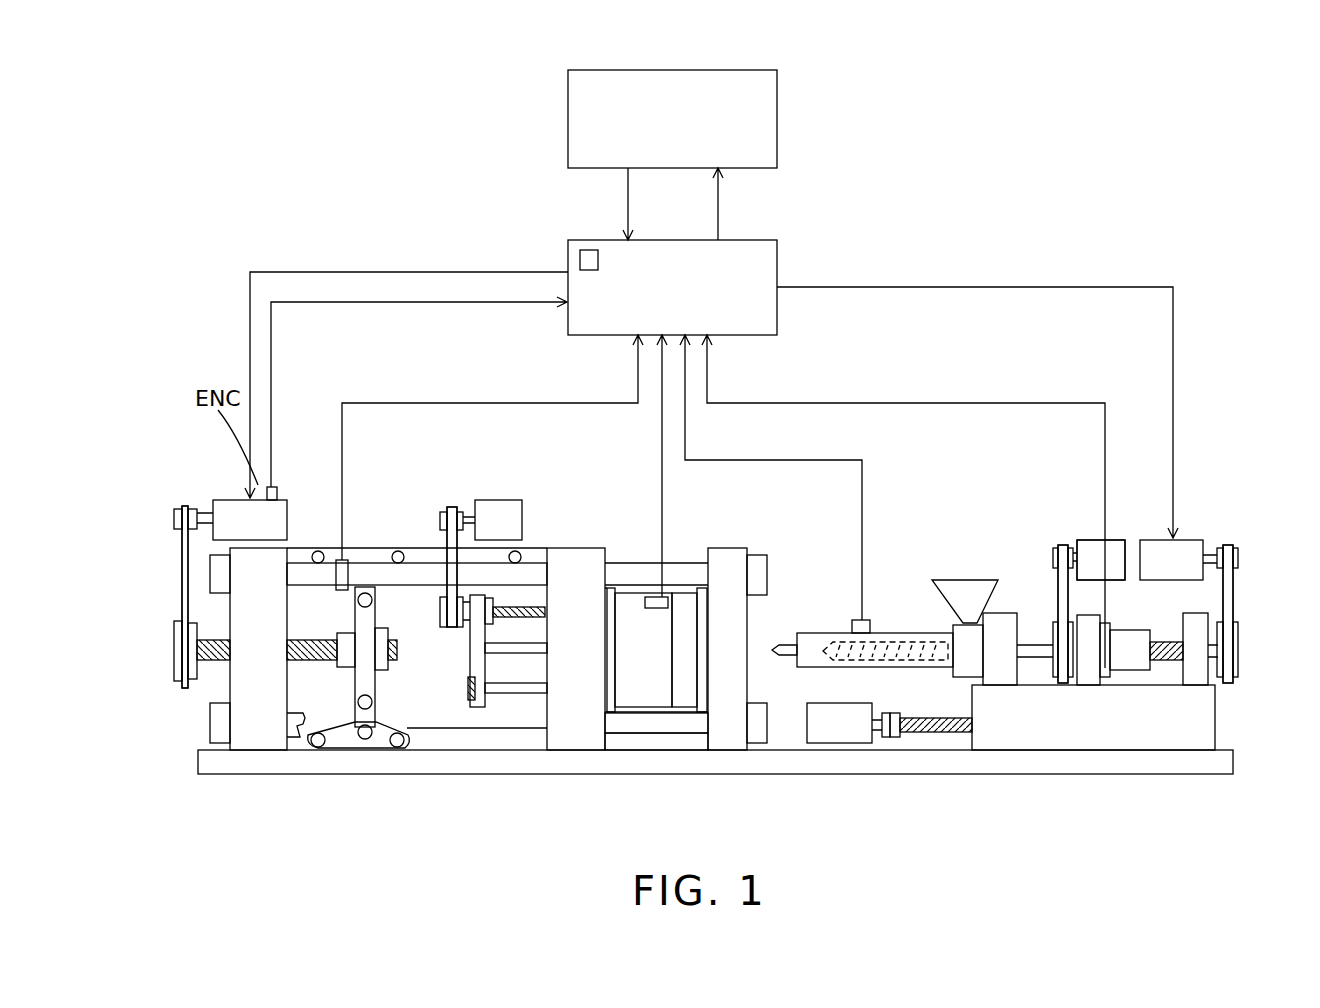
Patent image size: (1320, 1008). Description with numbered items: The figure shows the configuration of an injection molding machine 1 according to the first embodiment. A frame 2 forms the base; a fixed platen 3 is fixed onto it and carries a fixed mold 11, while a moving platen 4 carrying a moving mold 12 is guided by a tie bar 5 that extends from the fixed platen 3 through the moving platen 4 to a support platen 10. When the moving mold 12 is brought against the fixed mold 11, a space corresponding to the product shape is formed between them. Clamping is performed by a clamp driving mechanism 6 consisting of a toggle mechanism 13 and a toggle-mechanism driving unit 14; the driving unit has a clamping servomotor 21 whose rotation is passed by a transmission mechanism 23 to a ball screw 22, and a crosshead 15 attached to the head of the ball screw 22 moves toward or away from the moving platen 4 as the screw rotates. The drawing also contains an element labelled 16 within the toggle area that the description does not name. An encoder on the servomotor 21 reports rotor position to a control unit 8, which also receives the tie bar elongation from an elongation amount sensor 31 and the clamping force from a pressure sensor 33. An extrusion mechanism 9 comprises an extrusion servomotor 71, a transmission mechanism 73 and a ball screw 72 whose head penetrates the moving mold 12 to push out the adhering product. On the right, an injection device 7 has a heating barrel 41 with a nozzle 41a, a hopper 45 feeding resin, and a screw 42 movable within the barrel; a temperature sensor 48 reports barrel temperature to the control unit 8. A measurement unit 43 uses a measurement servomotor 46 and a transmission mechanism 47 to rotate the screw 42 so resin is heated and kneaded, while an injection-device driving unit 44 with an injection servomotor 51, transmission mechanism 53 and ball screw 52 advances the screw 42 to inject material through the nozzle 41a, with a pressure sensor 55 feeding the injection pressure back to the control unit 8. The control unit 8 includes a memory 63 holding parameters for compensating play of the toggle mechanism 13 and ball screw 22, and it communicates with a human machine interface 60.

The injection molding machine 1 is at (958, 123).
The frame 2 is at (700, 775).
The fixed platen 3 is at (729, 562).
The moving platen 4 is at (580, 567).
The tie bar 5 is at (424, 575).
The clamp driving mechanism 6 is at (168, 469).
The injection device 7 is at (1062, 508).
The control unit 8 is at (778, 254).
The extrusion mechanism 9 is at (454, 490).
The support platen 10 is at (253, 733).
The fixed mold 11 is at (688, 605).
The moving mold 12 is at (627, 605).
The toggle mechanism 13 is at (424, 767).
The toggle-mechanism driving unit 14 is at (162, 500).
The crosshead 15 is at (368, 613).
The toggle link 16 is at (360, 716).
The clamping servomotor 21 is at (271, 512).
The ball screw 22 is at (206, 660).
The transmission mechanism 23 is at (169, 590).
The elongation amount sensor 31 is at (348, 576).
The pressure sensor 33 is at (655, 593).
The heating barrel 41 is at (881, 633).
The nozzle 41a is at (797, 560).
The screw 42 is at (870, 660).
The measurement unit 43 is at (1067, 538).
The injection-device driving unit 44 is at (1223, 520).
The hopper 45 is at (964, 595).
The measurement servomotor 46 is at (1096, 547).
The transmission mechanism 47 is at (1044, 582).
The temperature sensor 48 is at (854, 620).
The injection servomotor 51 is at (1187, 547).
The ball screw 52 is at (1160, 660).
The transmission mechanism 53 is at (1248, 589).
The pressure sensor 55 is at (1107, 670).
The human machine interface 60 is at (778, 118).
The memory 63 is at (589, 248).
The extrusion servomotor 71 is at (516, 512).
The ball screw 72 is at (492, 615).
The transmission mechanism 73 is at (434, 497).